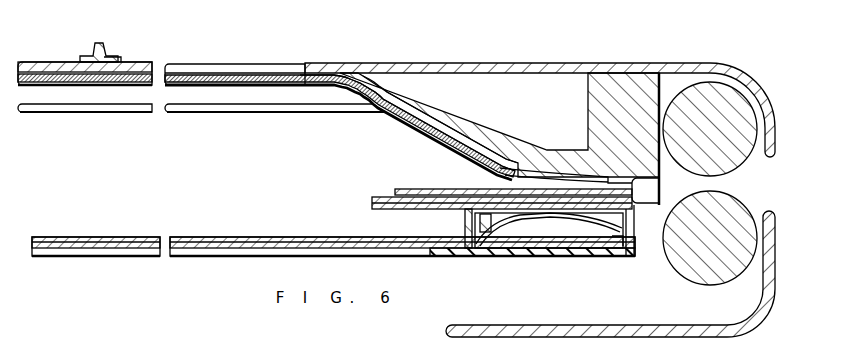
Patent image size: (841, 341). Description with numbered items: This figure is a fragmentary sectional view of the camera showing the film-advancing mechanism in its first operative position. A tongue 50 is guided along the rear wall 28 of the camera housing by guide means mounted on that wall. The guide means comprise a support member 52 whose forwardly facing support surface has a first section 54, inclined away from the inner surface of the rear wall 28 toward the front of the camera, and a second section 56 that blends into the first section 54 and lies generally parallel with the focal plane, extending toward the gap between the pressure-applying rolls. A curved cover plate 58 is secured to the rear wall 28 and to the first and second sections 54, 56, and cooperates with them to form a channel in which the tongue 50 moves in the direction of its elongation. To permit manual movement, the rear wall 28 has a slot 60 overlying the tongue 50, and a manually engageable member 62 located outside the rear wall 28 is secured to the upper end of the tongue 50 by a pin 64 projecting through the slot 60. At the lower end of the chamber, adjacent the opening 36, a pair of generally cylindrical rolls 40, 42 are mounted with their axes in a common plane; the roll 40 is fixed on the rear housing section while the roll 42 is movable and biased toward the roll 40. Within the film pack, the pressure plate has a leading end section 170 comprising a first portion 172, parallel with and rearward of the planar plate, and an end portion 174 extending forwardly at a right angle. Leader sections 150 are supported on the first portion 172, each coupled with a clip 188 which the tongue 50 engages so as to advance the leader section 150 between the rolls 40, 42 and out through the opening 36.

The rear wall 28 is at (328, 66).
The opening 36 is at (767, 210).
The roll 40 is at (733, 115).
The roll 42 is at (722, 268).
The tongue 50 is at (230, 75).
The support member 52 is at (482, 137).
The first section 54 is at (440, 123).
The second section 56 is at (560, 172).
The cover plate 58 is at (254, 78).
The slot 60 is at (195, 65).
The manually engageable member 62 is at (104, 51).
The pin 64 is at (120, 62).
The leader section 150 is at (636, 216).
The leading end section 170 is at (495, 237).
The first portion 172 is at (556, 215).
The end portion 174 is at (612, 236).
The clip 188 is at (640, 184).